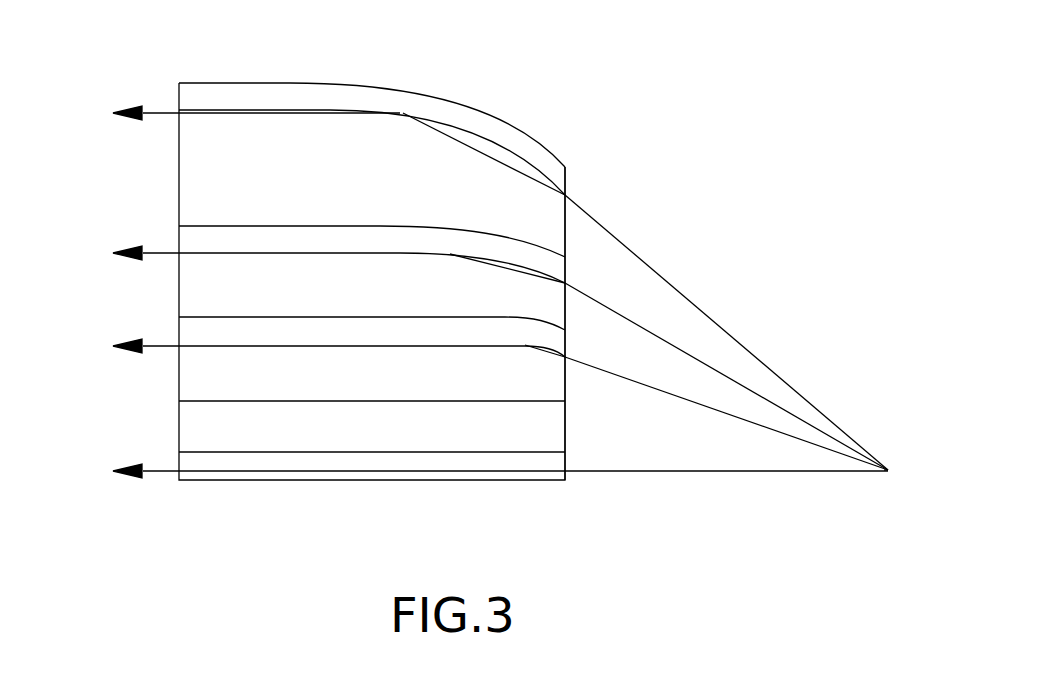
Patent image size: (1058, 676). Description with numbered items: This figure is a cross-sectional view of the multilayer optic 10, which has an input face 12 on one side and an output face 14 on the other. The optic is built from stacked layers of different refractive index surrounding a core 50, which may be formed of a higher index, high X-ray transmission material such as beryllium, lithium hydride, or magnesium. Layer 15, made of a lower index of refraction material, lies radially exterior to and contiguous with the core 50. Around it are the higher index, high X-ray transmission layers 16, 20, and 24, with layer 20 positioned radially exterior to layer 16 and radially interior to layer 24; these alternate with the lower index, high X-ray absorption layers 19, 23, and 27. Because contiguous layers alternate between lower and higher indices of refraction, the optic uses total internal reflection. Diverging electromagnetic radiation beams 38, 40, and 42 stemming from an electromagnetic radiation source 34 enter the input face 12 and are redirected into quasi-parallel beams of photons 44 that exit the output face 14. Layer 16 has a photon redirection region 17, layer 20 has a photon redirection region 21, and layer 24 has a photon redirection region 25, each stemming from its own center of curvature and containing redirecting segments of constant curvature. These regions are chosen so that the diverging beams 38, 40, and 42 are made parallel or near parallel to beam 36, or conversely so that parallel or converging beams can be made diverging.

The multilayer optic 10 is at (593, 86).
The input face 12 is at (565, 317).
The output face 14 is at (179, 292).
The layer 15 is at (290, 442).
The layer 16 is at (290, 382).
The photon redirection region 17 is at (548, 345).
The layer 19 is at (293, 342).
The layer 20 is at (256, 287).
The photon redirection region 21 is at (562, 288).
The layer 23 is at (290, 249).
The layer 24 is at (290, 189).
The photon redirection region 25 is at (380, 118).
The layer 27 is at (262, 107).
The electromagnetic radiation source 34 is at (888, 472).
The beam 36 is at (730, 472).
The electromagnetic radiation beam 38 is at (625, 378).
The electromagnetic radiation beam 40 is at (592, 298).
The electromagnetic radiation beam 42 is at (690, 300).
The quasi-parallel beams of photons 44 is at (150, 114).
The core 50 is at (247, 460).